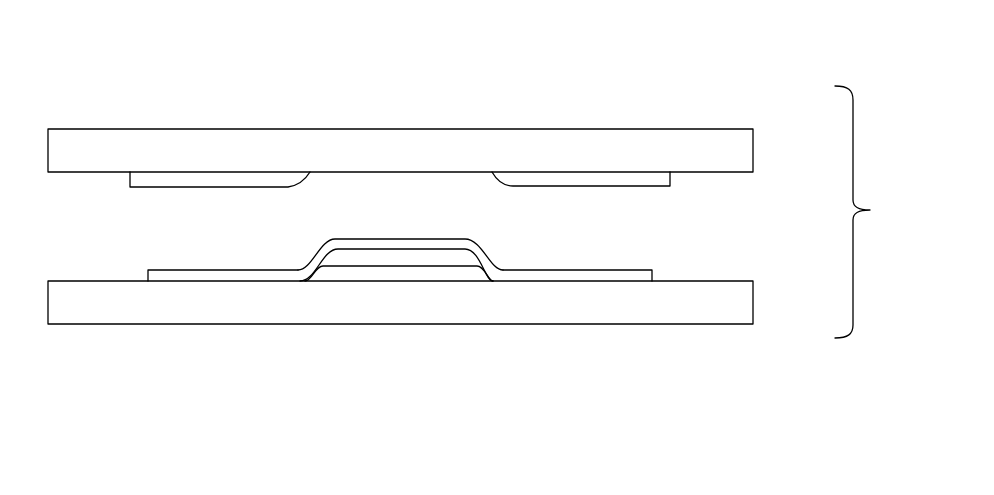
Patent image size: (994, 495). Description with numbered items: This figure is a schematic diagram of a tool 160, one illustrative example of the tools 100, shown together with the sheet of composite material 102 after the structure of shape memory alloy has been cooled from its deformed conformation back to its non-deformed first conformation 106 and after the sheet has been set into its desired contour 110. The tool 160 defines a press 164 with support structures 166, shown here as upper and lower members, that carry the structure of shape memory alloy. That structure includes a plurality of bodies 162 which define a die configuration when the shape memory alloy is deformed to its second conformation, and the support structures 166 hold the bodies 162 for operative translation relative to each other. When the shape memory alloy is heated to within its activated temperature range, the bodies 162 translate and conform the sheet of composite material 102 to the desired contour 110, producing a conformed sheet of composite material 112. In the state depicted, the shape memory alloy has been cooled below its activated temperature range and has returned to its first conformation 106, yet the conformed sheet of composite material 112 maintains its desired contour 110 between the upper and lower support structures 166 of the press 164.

The tool 100 is at (748, 93).
The sheet of composite material 102 is at (627, 268).
The first conformation 106 is at (232, 180).
The desired contour 110 is at (501, 268).
The conformed sheet of composite material 112 is at (432, 239).
The tool 160 is at (690, 68).
The bodies 162 is at (167, 187).
The press 164 is at (605, 90).
The support structures 166 is at (388, 129).